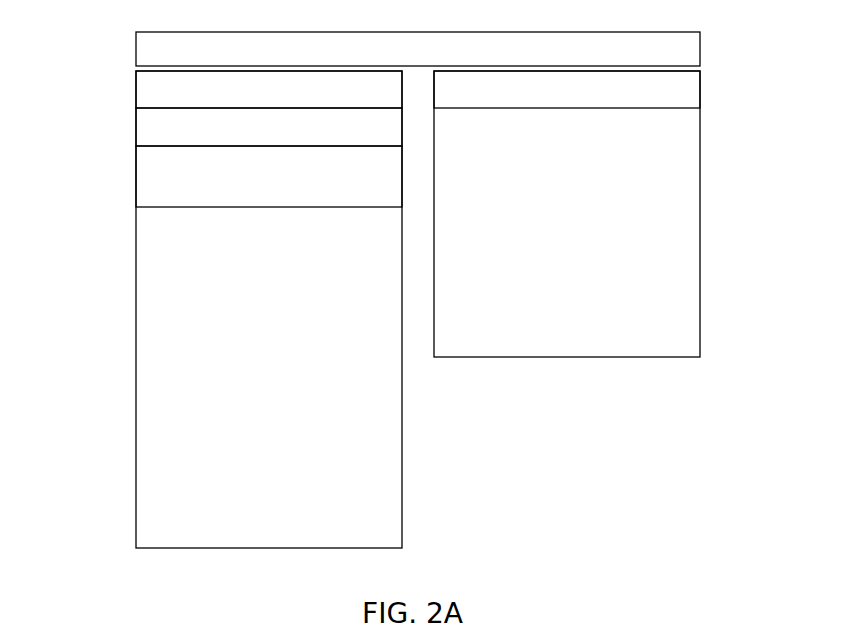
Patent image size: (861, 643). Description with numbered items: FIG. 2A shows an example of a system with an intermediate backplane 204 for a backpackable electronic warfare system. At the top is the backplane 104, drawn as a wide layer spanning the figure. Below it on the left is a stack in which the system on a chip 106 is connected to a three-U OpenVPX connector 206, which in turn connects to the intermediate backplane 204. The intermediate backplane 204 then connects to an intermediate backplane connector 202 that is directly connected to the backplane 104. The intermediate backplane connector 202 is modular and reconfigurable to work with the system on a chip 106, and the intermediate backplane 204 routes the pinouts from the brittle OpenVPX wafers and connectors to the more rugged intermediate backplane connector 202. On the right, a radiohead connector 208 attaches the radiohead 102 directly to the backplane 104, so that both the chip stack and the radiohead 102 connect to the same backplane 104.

The radiohead 102 is at (700, 232).
The backplane 104 is at (700, 50).
The system on a chip 106 is at (135, 378).
The intermediate backplane connector 202 is at (133, 91).
The intermediate backplane 204 is at (133, 128).
The 3U OpenVPX connector 206 is at (132, 177).
The radiohead connector 208 is at (700, 89).